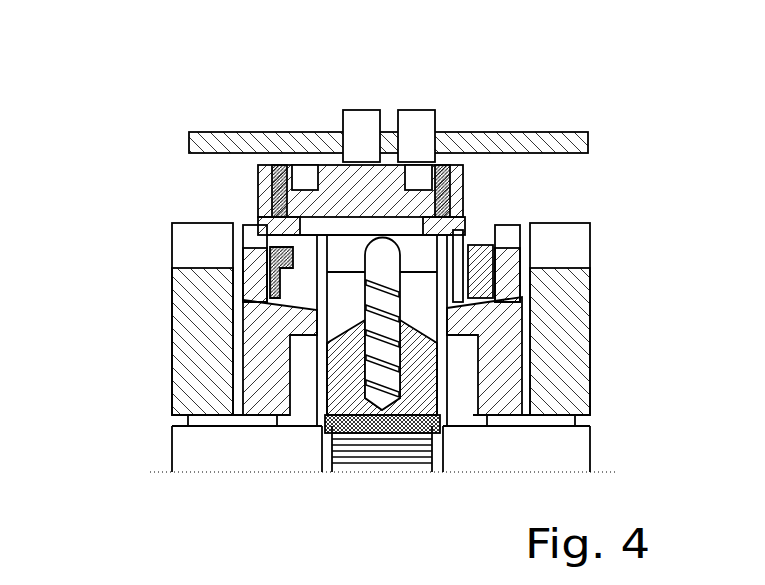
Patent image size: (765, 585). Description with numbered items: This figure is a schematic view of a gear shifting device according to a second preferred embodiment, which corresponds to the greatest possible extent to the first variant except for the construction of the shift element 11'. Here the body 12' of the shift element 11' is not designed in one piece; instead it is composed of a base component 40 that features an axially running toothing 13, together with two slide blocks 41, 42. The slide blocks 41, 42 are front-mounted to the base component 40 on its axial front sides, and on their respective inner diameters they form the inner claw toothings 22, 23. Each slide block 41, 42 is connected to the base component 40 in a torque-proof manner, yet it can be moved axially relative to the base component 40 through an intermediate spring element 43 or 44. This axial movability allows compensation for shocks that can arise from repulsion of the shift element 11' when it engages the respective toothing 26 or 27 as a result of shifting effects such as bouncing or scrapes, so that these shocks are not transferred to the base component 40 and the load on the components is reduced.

The shift element 11' is at (281, 116).
The body 12' is at (388, 89).
The axially running toothing 13 is at (172, 310).
The inner claw toothing 22 is at (257, 247).
The inner claw toothing 23 is at (466, 222).
The toothing 26 is at (247, 224).
The toothing 27 is at (508, 232).
The base component 40 is at (385, 112).
The slide block 41 is at (257, 166).
The slide block 42 is at (465, 190).
The intermediate spring element 43 is at (285, 166).
The intermediate spring element 44 is at (445, 133).